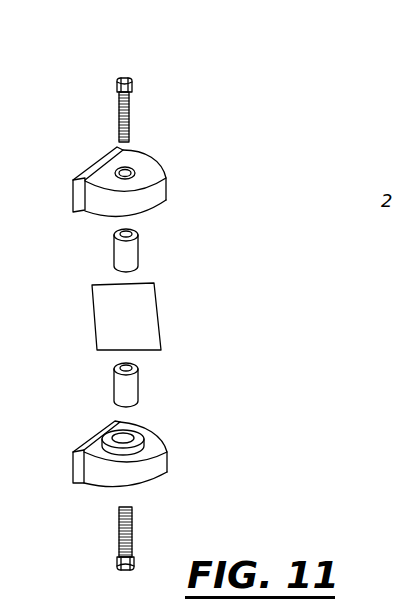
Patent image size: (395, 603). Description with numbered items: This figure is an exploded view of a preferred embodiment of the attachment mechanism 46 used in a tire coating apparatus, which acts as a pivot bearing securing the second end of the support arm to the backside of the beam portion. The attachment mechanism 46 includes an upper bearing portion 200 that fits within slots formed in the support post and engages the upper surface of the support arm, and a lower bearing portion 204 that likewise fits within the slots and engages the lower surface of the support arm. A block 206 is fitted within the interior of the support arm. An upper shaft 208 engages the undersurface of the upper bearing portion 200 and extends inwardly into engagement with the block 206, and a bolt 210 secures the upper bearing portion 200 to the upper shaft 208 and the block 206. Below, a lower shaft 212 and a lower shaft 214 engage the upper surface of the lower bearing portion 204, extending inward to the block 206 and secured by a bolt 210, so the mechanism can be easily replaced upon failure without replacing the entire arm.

The attachment mechanism 46 is at (126, 73).
The bolt 210 is at (130, 110).
The upper bearing portion 200 is at (153, 160).
The upper shaft 208 is at (138, 249).
The block 206 is at (132, 320).
The lower shaft 212 is at (138, 384).
The lower bearing portion 204 is at (157, 433).
The lower shaft 214 is at (132, 522).